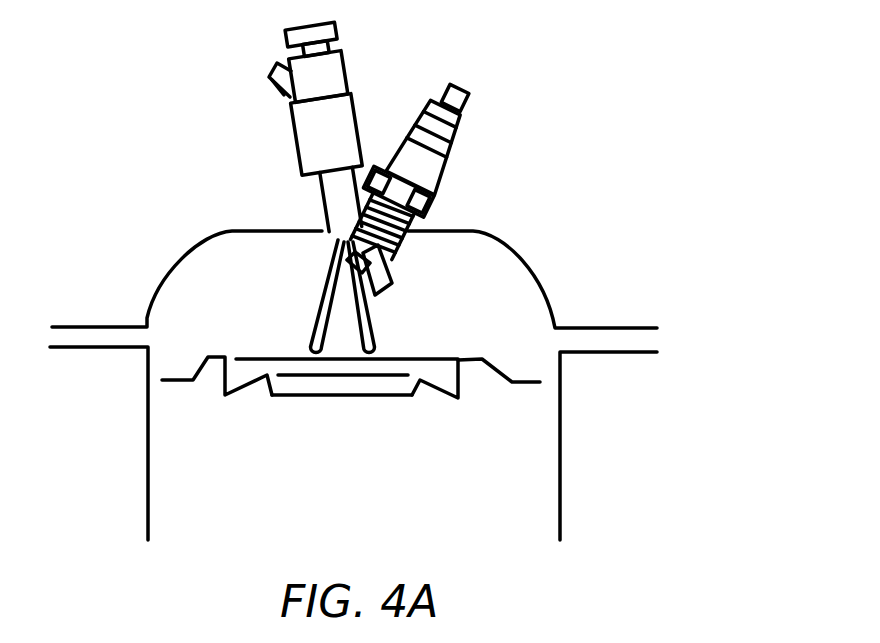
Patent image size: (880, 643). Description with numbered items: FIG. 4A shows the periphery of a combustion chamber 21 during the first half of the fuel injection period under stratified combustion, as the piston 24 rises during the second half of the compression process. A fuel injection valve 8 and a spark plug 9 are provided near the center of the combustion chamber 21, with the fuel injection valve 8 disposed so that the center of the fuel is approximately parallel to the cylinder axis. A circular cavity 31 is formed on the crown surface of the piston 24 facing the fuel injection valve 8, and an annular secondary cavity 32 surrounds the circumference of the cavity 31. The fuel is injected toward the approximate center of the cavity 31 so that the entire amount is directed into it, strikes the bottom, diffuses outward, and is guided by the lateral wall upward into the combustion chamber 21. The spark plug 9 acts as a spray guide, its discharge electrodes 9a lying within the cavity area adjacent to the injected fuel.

The fuel injection valve 8 is at (278, 80).
The spark plug 9 is at (463, 135).
The discharge electrodes 9a is at (392, 282).
The combustion chamber 21 is at (220, 255).
The piston 24 is at (520, 437).
The cavity 31 is at (387, 387).
The secondary cavity 32 is at (445, 374).